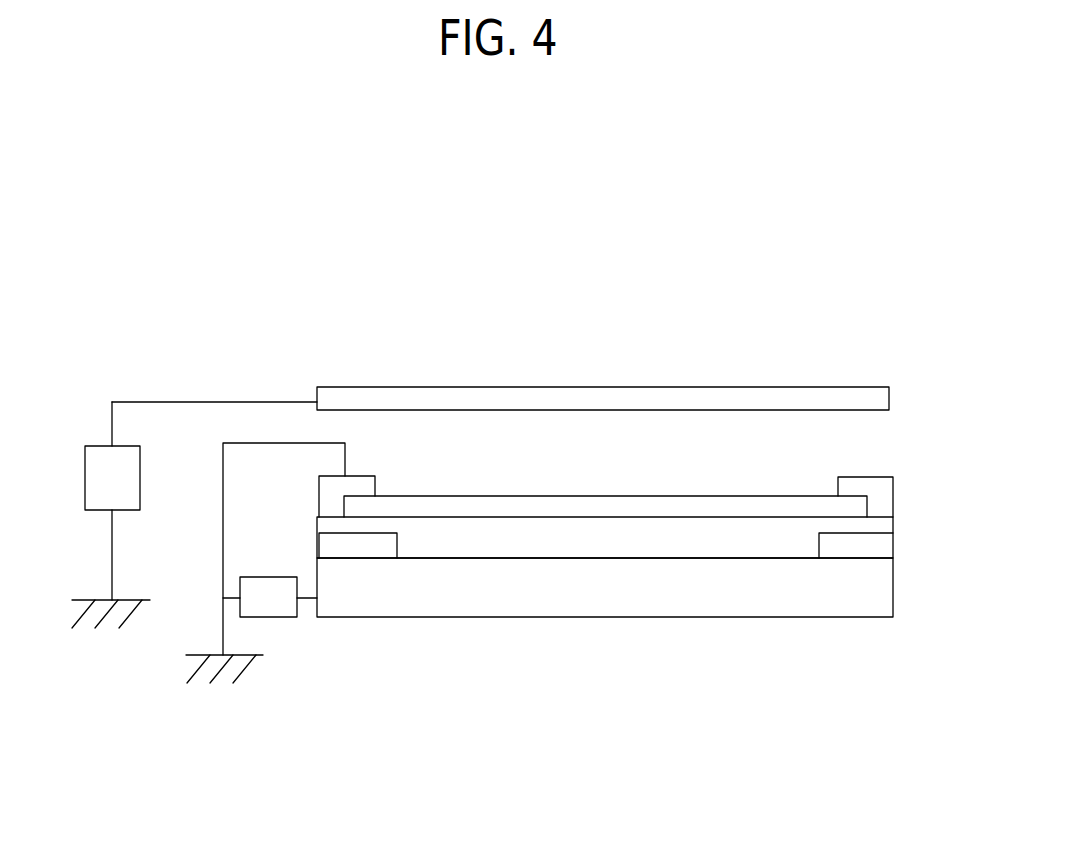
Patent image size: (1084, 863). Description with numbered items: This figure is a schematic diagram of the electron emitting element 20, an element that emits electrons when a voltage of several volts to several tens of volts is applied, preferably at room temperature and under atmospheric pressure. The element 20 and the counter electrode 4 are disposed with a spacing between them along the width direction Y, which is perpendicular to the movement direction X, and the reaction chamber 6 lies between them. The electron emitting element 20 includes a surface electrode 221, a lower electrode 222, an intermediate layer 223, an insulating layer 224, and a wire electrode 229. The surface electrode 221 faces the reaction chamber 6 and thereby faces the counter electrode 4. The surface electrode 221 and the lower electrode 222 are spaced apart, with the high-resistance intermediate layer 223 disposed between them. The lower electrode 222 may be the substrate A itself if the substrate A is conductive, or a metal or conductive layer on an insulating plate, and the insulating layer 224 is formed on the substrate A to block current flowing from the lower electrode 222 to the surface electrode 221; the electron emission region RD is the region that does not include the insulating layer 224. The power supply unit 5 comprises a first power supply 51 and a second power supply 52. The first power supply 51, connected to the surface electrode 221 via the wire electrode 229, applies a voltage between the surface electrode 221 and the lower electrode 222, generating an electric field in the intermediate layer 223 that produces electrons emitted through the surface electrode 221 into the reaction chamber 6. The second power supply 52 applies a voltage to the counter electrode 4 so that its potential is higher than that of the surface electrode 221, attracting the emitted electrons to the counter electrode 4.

The counter electrode 4 is at (889, 396).
The power supply unit 5 is at (168, 570).
The reaction chamber 6 is at (797, 464).
The electron emitting element 20 is at (773, 313).
The first power supply 51 is at (270, 590).
The second power supply 52 is at (128, 477).
The surface electrode 221 is at (641, 509).
The lower electrode 222 is at (683, 595).
The intermediate layer 223 is at (882, 527).
The insulating layer 224 is at (882, 547).
The wire electrode 229 is at (877, 493).
The substrate A is at (873, 602).
The electron emission region RD is at (587, 545).
The movement direction X is at (605, 354).
The width direction Y is at (65, 447).